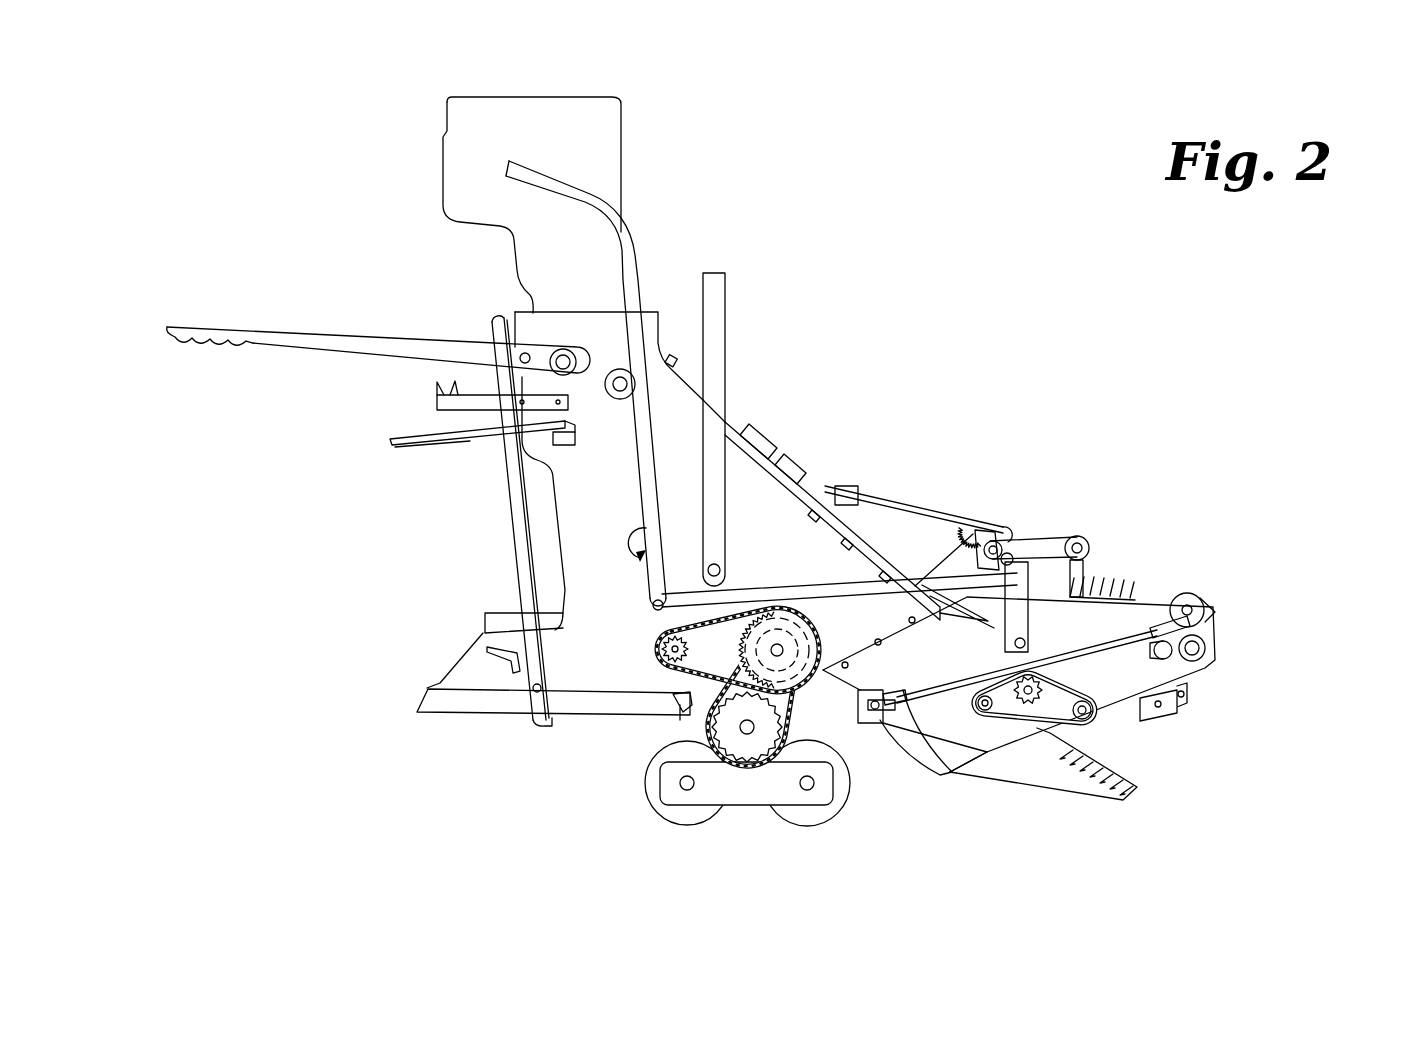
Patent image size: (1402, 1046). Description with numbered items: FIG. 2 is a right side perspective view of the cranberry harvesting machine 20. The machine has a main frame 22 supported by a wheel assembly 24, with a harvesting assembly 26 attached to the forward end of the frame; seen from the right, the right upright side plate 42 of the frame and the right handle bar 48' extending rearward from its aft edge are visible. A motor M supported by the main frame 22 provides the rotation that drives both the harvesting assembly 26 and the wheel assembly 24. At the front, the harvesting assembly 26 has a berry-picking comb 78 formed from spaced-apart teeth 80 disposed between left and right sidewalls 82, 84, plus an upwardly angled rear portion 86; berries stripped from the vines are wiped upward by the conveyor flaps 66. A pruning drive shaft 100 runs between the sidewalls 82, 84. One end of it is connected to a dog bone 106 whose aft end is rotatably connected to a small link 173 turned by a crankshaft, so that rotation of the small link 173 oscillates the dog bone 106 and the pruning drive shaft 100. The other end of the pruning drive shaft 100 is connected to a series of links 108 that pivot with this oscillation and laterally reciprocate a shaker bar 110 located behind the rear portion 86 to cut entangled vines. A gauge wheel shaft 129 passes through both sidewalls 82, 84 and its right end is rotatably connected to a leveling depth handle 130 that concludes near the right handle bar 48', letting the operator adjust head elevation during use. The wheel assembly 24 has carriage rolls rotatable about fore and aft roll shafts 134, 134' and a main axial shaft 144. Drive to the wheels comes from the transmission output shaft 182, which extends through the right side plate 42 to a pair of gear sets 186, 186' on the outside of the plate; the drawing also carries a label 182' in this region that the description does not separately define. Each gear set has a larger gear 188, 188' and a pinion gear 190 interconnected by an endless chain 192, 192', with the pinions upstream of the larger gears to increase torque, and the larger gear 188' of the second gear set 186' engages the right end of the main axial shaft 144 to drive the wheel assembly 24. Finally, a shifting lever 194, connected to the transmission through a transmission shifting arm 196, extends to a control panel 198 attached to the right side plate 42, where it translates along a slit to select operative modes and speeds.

The cranberry harvesting machine 20 is at (1171, 304).
The main frame 22 is at (772, 498).
The wheel assembly 24 is at (639, 836).
The harvesting assembly 26 is at (1314, 527).
The right upright side plate 42 is at (630, 687).
The right handle bar 48' is at (378, 372).
The conveyor flaps 66 is at (760, 430).
The berry-picking comb 78 is at (1167, 790).
The teeth 80 is at (1130, 792).
The left sidewall 82 is at (1026, 542).
The right sidewall 84 is at (1145, 612).
The upwardly angled rear portion 86 is at (969, 762).
The pruning drive shaft 100 is at (1196, 648).
The dog bone 106 is at (1086, 540).
The series of links 108 is at (946, 684).
The shaker bar 110 is at (918, 735).
The gauge wheel shaft 129 is at (1024, 643).
The leveling depth handle 130 is at (633, 277).
The roll shaft 134 is at (829, 801).
The roll shaft 134' is at (691, 812).
The main axial shaft 144 is at (750, 732).
The small link 173 is at (989, 540).
The transmission output shaft 182 is at (704, 648).
The link rod 182' is at (839, 607).
The gear set 186 is at (642, 669).
The gear set 186' is at (850, 751).
The larger gear 188 is at (809, 647).
The larger gear 188' is at (673, 733).
The pinion gear 190 is at (670, 655).
The endless chain 192 is at (761, 567).
The endless chain 192' is at (854, 748).
The shifting lever 194 is at (520, 538).
The transmission shifting arm 196 is at (683, 694).
The control panel 198 is at (392, 440).
The motor M is at (590, 113).